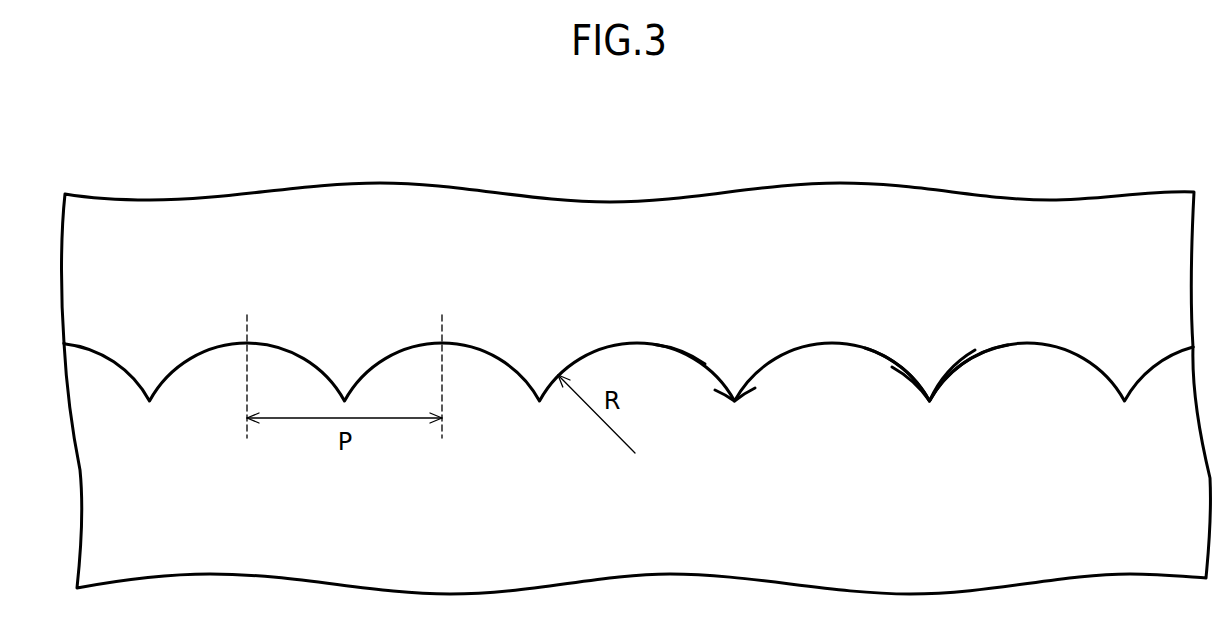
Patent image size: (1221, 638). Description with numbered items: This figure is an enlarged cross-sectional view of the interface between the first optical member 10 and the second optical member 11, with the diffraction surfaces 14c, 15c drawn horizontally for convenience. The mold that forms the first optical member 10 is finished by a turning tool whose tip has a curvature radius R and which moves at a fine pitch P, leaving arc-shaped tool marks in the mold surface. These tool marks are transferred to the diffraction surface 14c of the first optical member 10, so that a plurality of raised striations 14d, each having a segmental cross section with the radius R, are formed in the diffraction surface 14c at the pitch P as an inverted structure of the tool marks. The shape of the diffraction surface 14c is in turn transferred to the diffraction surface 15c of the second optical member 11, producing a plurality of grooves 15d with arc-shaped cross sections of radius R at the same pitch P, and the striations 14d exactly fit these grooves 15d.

The first optical member 10 is at (169, 514).
The second optical member 11 is at (169, 284).
The diffraction surface 14c is at (682, 352).
The diffraction surface 15c is at (745, 383).
The raised striations 14d is at (975, 350).
The grooves 15d is at (1008, 345).